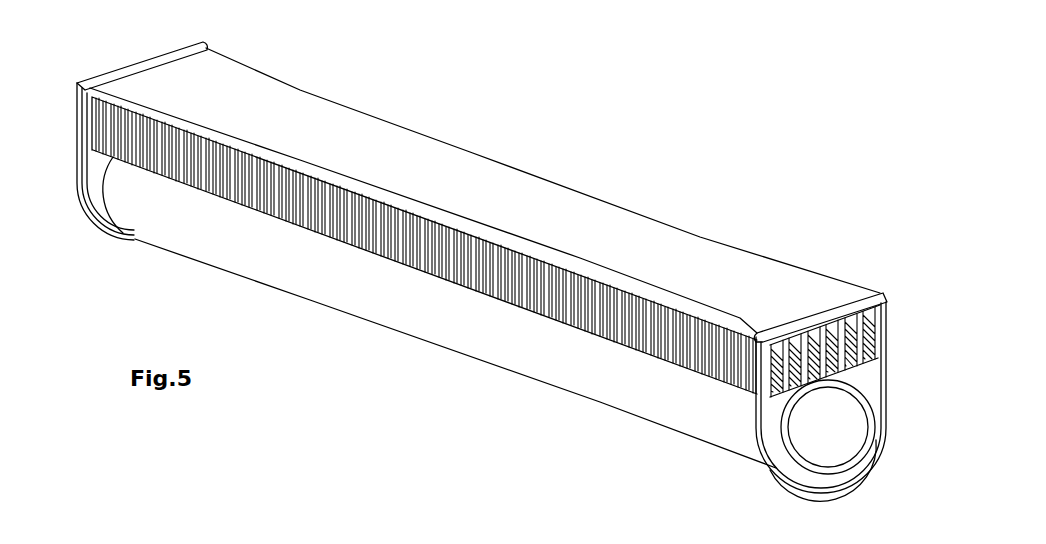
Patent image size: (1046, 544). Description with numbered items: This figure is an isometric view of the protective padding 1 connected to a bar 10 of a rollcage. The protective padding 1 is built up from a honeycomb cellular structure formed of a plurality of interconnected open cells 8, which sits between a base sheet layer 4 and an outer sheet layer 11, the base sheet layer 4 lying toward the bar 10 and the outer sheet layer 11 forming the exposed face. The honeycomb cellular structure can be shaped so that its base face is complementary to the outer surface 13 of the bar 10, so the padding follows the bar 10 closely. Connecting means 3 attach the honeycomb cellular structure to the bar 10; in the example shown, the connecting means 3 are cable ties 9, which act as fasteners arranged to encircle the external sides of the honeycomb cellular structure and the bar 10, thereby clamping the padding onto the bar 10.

The protective padding 1 is at (625, 219).
The connecting means 3 is at (215, 50).
The base sheet layer 4 is at (370, 253).
The open cells 8 is at (290, 222).
The cable tie 9 is at (128, 241).
The bar 10 is at (457, 328).
The outer sheet layer 11 is at (488, 198).
The outer surface of the bar 13 is at (570, 359).